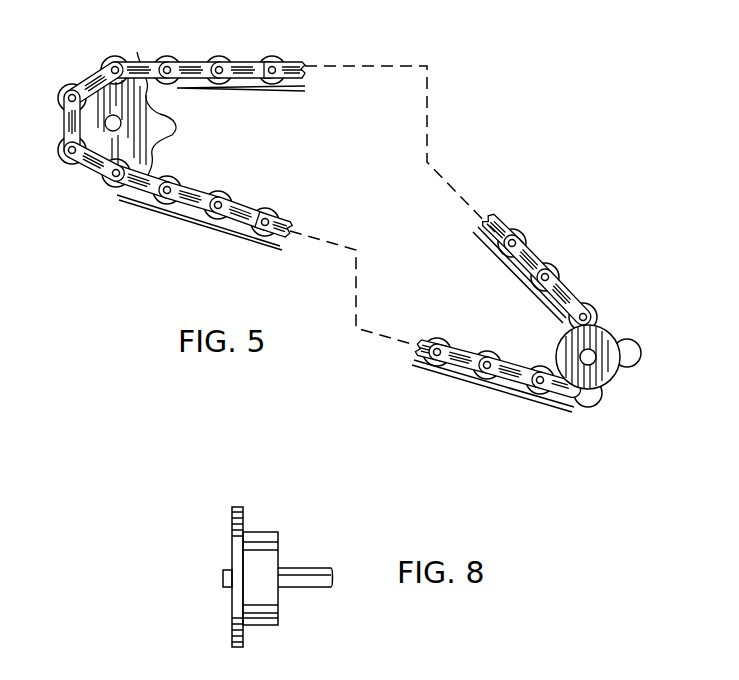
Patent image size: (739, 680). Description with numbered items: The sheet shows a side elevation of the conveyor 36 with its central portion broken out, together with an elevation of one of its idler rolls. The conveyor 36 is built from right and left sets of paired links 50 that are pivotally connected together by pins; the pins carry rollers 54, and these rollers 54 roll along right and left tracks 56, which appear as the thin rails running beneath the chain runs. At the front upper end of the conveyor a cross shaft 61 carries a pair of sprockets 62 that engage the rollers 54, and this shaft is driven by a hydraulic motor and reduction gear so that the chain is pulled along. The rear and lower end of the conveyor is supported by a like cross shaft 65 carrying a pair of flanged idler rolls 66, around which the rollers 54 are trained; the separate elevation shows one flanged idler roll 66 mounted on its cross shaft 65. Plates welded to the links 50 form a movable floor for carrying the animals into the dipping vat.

In FIG. 5, the conveyor 36 is at (425, 247).
In FIG. 5, the paired links 50 is at (197, 62).
In FIG. 5, the rollers 54 is at (270, 56).
In FIG. 5, the tracks 56 is at (257, 90).
In FIG. 5, the cross shaft 61 is at (83, 160).
In FIG. 5, the sprockets 62 is at (140, 66).
In FIG. 5, the cross shaft 65 is at (592, 362).
In FIG. 8, the cross shaft 65 is at (305, 577).
In FIG. 5, the flanged idler rolls 66 is at (600, 343).
In FIG. 8, the flanged idler rolls 66 is at (262, 542).